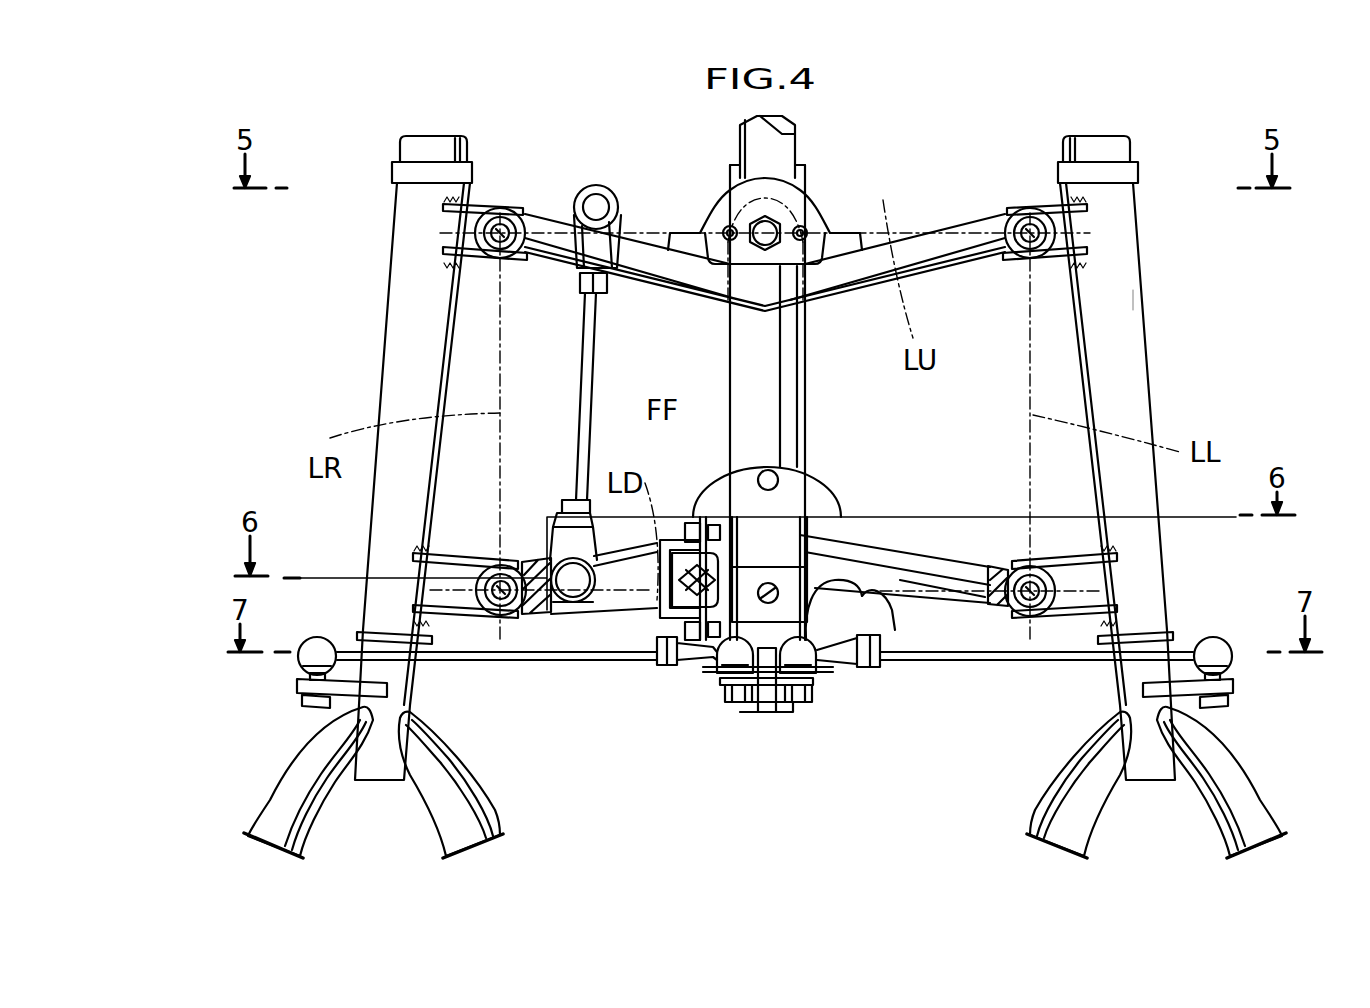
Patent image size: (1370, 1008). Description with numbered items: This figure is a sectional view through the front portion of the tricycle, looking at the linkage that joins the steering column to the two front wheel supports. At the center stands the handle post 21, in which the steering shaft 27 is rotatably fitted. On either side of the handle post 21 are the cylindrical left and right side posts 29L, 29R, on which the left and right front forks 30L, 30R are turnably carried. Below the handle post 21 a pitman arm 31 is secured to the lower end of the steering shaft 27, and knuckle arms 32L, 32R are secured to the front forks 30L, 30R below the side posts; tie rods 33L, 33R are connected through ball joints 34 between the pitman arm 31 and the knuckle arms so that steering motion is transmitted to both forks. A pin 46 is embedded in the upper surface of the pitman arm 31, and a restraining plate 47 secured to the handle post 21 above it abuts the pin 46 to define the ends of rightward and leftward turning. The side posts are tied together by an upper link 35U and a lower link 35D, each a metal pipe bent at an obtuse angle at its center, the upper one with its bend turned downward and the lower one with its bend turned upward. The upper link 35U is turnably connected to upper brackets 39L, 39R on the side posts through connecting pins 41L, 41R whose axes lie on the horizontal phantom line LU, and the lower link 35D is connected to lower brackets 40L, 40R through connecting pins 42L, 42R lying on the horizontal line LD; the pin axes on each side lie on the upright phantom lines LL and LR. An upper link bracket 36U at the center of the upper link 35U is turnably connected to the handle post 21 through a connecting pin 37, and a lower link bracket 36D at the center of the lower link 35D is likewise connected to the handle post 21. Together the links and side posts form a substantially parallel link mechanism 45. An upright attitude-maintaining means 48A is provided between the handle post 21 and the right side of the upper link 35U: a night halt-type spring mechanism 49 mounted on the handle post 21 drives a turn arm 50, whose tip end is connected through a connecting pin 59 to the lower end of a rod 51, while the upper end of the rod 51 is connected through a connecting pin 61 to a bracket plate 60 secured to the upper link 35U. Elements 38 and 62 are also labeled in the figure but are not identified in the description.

The handle post 21 is at (797, 418).
The steering shaft 27 is at (785, 142).
The right side post 29R is at (385, 410).
The left side post 29L is at (1123, 367).
The right front fork 30R is at (283, 800).
The left front fork 30L is at (1228, 775).
The pitman arm 31 is at (770, 684).
The right knuckle arm 32R is at (357, 640).
The left knuckle arm 32L is at (1170, 633).
The tie rod 33R is at (562, 612).
The tie rod 33L is at (1000, 655).
The ball joint 34 is at (310, 657).
The upper link 35U is at (872, 256).
The lower link 35D is at (897, 560).
The upper link bracket 36U is at (748, 203).
The lower link bracket 36D is at (848, 612).
The connecting pin 37 is at (763, 248).
The lower pivot bolt 38 is at (783, 592).
The right upper bracket 39R is at (478, 208).
The left upper bracket 39L is at (1052, 202).
The right lower bracket 40R is at (485, 570).
The left lower bracket 40L is at (1077, 553).
The connecting pin 41R is at (500, 262).
The connecting pin 41L is at (1030, 262).
The connecting pin 42R is at (552, 592).
The connecting pin 42L is at (1043, 615).
The parallel link mechanism 45 is at (1146, 298).
The pin 46 is at (727, 700).
The restraining plate 47 is at (833, 671).
The upright attitude-maintaining means 48A is at (596, 398).
The spring mechanism 49 is at (808, 598).
The turn arm 50 is at (640, 655).
The rod 51 is at (573, 345).
The connecting pin 59 is at (592, 605).
The bracket plate 60 is at (620, 226).
The connecting pin 61 is at (598, 200).
The hole 62 is at (768, 470).